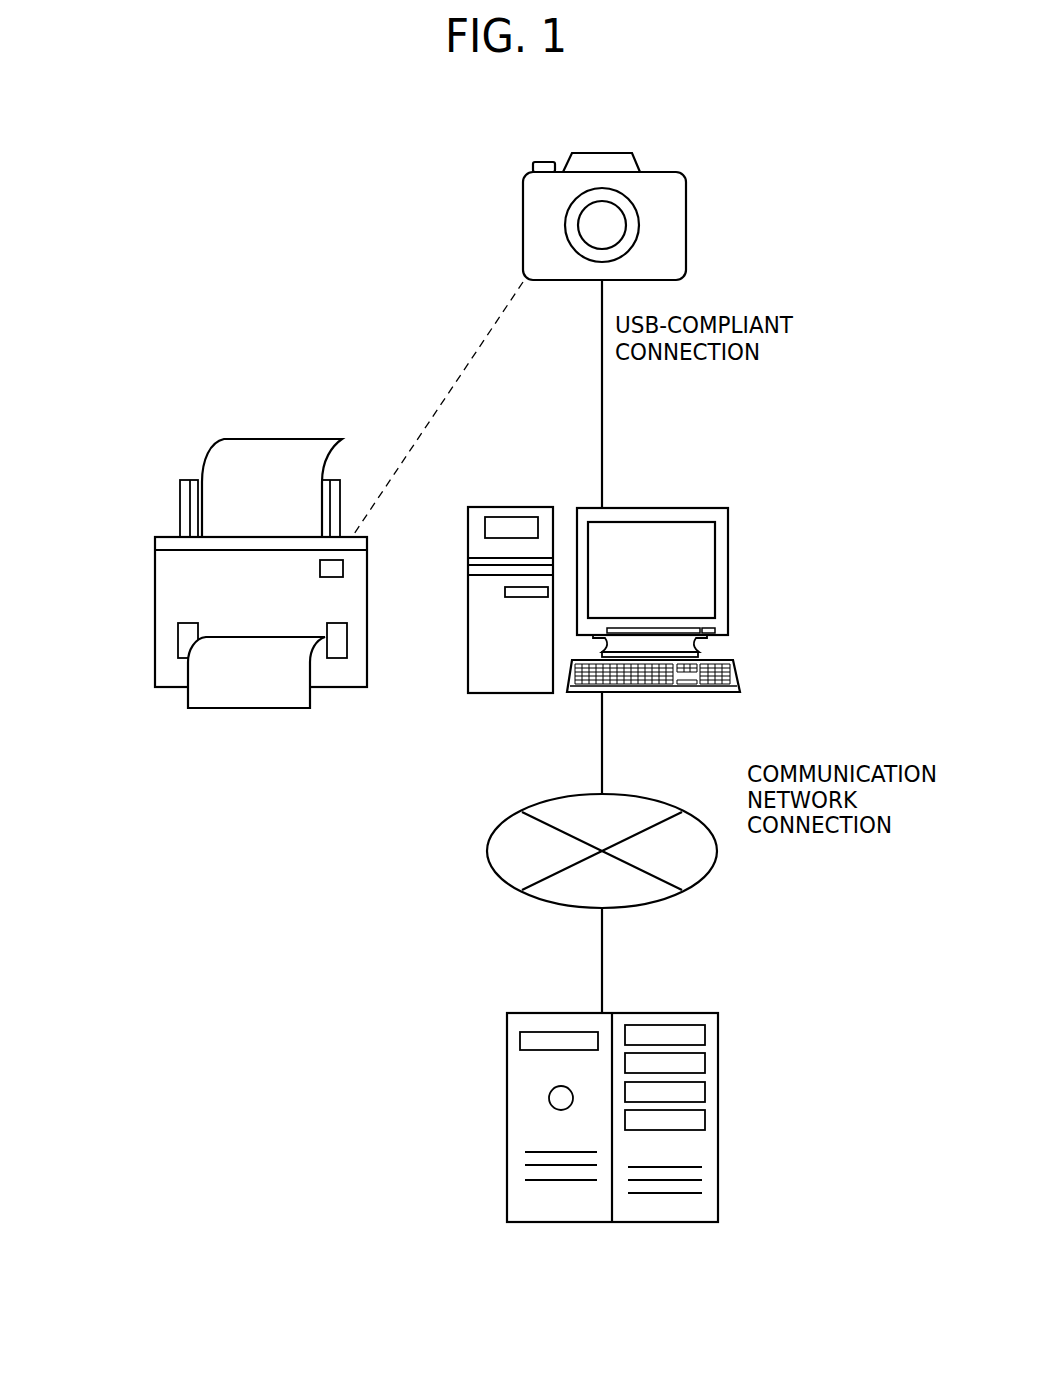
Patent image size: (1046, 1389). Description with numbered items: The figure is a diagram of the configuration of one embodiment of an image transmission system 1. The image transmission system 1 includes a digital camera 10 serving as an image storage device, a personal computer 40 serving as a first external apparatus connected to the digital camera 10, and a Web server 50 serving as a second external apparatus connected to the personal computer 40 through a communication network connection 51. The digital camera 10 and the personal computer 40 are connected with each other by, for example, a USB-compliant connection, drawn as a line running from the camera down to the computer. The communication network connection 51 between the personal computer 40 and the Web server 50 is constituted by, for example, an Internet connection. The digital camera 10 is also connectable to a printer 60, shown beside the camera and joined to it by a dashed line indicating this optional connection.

The image transmission system 1 is at (776, 442).
The digital camera 10 is at (700, 213).
The personal computer 40 is at (762, 523).
The Web server 50 is at (744, 1097).
The communication network connection 51 is at (717, 851).
The printer 60 is at (133, 587).